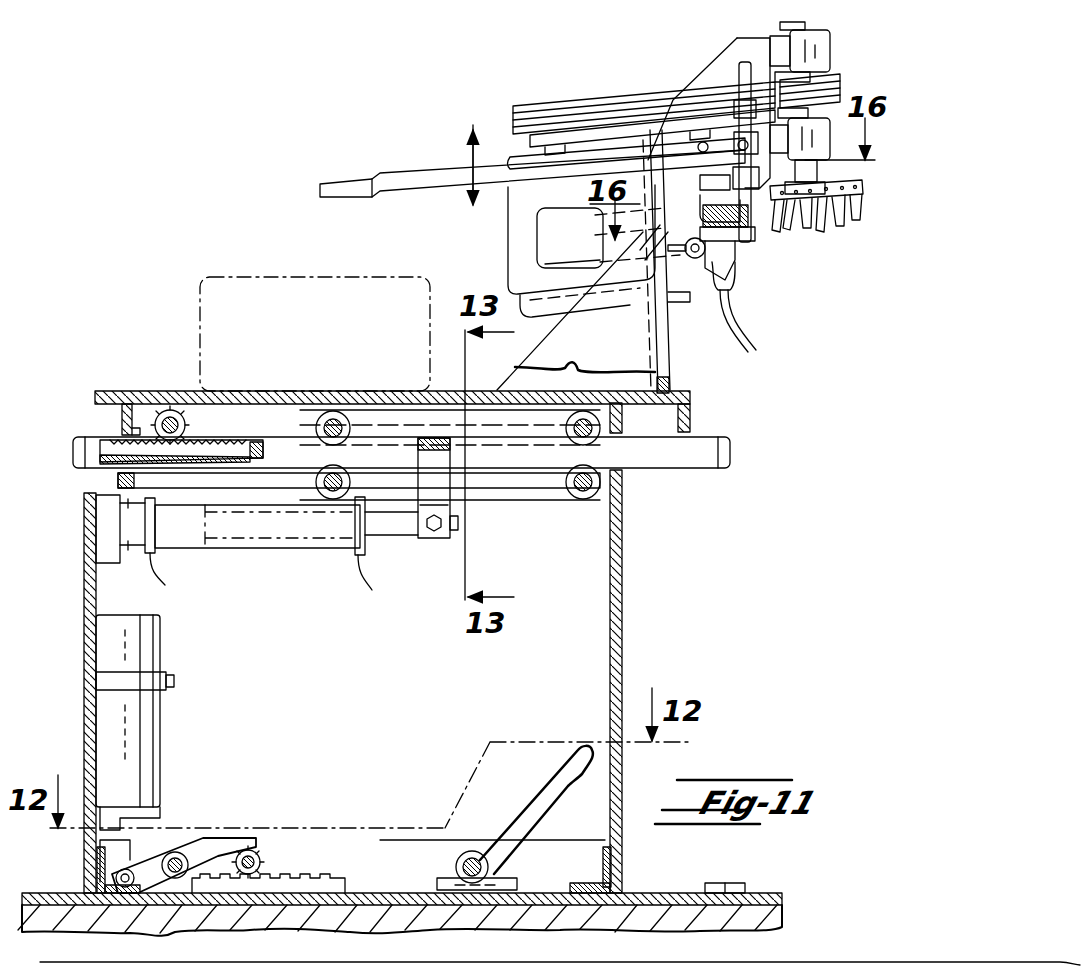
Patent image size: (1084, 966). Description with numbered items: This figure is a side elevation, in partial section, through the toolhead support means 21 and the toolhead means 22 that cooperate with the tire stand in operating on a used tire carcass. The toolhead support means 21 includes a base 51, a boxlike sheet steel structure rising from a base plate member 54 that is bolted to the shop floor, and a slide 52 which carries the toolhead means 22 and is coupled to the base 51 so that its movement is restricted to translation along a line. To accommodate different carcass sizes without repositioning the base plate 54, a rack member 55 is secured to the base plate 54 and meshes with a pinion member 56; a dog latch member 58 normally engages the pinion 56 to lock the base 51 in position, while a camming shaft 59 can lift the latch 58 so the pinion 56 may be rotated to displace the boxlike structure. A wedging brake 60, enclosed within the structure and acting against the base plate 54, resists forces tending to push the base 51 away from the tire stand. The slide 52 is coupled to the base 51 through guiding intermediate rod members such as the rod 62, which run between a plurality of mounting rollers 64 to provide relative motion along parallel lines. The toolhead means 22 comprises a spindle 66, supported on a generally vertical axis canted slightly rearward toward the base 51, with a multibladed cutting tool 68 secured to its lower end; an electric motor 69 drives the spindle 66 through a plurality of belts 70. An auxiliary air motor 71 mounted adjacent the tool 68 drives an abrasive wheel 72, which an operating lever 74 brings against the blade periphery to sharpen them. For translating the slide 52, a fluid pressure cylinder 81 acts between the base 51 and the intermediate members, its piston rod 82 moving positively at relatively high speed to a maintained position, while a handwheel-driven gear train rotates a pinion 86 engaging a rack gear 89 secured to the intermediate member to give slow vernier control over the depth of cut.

The toolhead support means 21 is at (640, 585).
The toolhead means 22 is at (728, 58).
The base 51 is at (96, 656).
The slide 52 is at (122, 415).
The base plate member 54 is at (668, 890).
The rack member 55 is at (322, 878).
The pinion member 56 is at (268, 860).
The dog latch member 58 is at (250, 850).
The camming shaft 59 is at (176, 852).
The wedging brake 60 is at (473, 850).
The guiding intermediate member 62 is at (716, 468).
The mounting rollers 64 is at (352, 480).
The spindle 66 is at (800, 23).
The multibladed cutting tool 68 is at (822, 222).
The electric motor 69 is at (520, 248).
The belts 70 is at (642, 108).
The air motor 71 is at (734, 278).
The abrasive wheel 72 is at (735, 198).
The operating lever 74 is at (432, 190).
The fluid pressure cylinder 81 is at (248, 542).
The piston rod 82 is at (398, 545).
The pinion 86 is at (176, 408).
The rack gear 89 is at (197, 447).